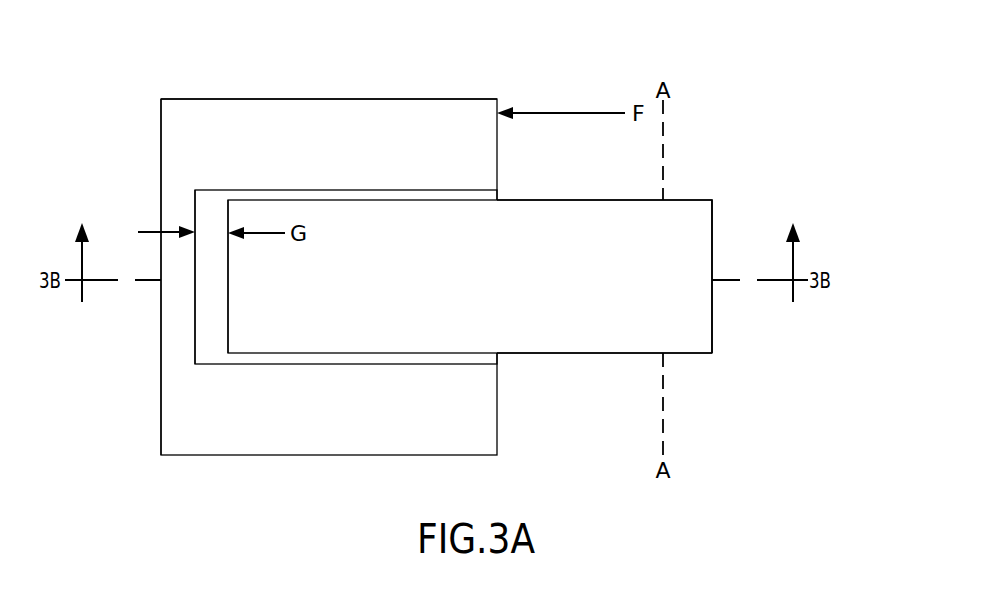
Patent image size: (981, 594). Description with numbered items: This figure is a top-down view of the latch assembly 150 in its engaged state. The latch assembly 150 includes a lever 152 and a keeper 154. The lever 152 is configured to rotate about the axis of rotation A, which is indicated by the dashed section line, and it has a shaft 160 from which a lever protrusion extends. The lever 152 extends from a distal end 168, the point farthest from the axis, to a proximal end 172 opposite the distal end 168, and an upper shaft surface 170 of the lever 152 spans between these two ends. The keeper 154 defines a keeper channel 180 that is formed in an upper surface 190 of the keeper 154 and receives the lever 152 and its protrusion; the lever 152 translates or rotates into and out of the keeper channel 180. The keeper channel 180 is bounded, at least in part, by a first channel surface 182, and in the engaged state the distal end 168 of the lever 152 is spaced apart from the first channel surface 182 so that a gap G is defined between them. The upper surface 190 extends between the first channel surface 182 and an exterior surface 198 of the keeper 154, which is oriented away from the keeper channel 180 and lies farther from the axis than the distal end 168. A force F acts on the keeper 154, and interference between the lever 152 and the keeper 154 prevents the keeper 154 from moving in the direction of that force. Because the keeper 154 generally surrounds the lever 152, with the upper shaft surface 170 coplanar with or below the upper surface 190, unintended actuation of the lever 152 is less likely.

The latch assembly 150 is at (625, 79).
The lever 152 is at (693, 208).
The keeper 154 is at (273, 130).
The shaft 160 is at (567, 328).
The distal end 168 is at (228, 330).
The upper shaft surface 170 is at (436, 285).
The proximal end 172 is at (712, 330).
The keeper channel 180 is at (203, 206).
The first channel surface 182 is at (195, 288).
The upper surface 190 is at (349, 162).
The exterior surface 198 is at (161, 349).